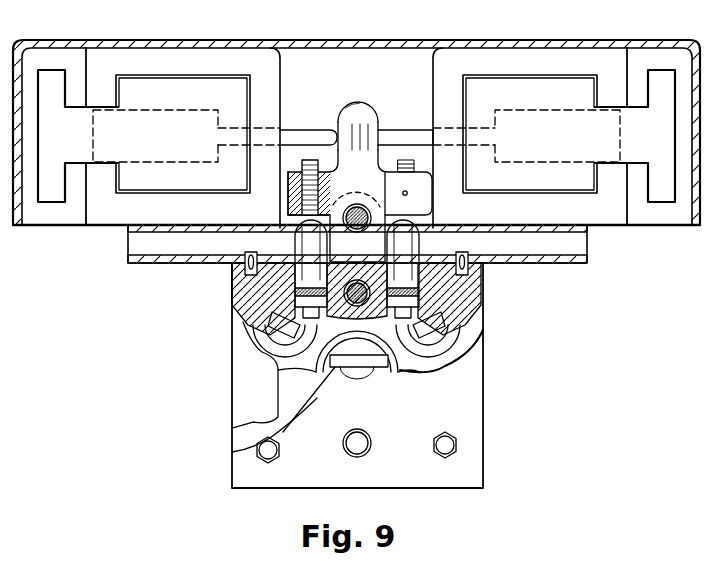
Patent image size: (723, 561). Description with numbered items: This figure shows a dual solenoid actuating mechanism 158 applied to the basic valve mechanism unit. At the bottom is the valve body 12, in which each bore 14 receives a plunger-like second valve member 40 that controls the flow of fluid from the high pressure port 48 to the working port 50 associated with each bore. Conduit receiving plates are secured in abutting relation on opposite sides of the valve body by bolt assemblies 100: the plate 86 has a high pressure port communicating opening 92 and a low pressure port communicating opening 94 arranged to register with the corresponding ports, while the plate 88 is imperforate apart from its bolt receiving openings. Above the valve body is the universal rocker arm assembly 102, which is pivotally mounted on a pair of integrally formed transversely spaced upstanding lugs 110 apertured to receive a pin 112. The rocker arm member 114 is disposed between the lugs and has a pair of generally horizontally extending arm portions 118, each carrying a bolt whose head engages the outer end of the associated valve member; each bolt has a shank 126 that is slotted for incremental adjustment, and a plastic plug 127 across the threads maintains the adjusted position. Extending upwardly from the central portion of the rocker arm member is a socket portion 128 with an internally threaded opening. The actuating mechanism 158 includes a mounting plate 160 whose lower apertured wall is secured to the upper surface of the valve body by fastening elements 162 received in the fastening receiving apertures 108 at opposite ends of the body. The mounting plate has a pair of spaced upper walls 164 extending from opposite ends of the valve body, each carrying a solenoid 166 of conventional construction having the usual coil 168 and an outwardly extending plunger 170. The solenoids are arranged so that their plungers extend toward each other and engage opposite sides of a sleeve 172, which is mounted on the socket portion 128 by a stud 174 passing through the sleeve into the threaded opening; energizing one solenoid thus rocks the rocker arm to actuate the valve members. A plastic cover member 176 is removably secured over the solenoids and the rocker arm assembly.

The valve body 12 is at (292, 388).
The bore 14 is at (390, 284).
The second valve member 40 is at (354, 283).
The high pressure port 48 is at (337, 373).
The working port 50 is at (275, 315).
The adapter plate 86 is at (465, 404).
The imperforate plate 88 is at (245, 376).
The high pressure port communicating opening 92 is at (367, 377).
The low pressure port communicating opening 94 is at (365, 451).
The bolt assembly 100 is at (278, 445).
The rocker arm assembly 102 is at (383, 168).
The fastening receiving aperture 108 is at (243, 290).
The upstanding lug 110 is at (348, 250).
The pin 112 is at (402, 263).
The rocker arm member 114 is at (356, 205).
The arm portion 118 is at (296, 197).
The bolt shank 126 is at (300, 170).
The plastic plug 127 is at (403, 192).
The socket portion 128 is at (345, 166).
The dual solenoid actuating mechanism 158 is at (385, 39).
The mounting plate 160 is at (593, 252).
The fastening element 162 is at (243, 277).
The upper wall 164 is at (213, 228).
The solenoid 166 is at (128, 40).
The coil 168 is at (262, 60).
The plunger 170 is at (326, 132).
The sleeve 172 is at (367, 113).
The stud 174 is at (356, 108).
The plastic cover member 176 is at (152, 40).